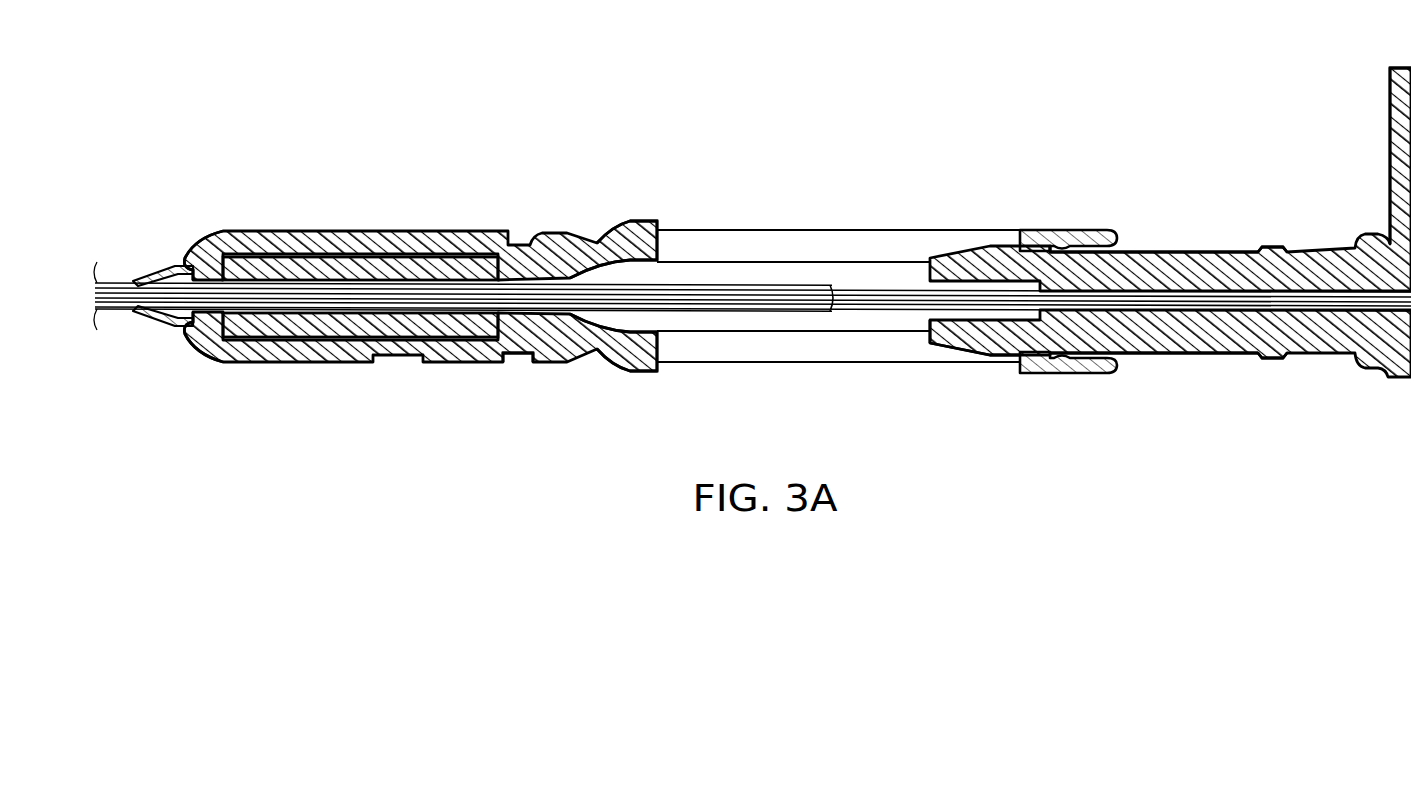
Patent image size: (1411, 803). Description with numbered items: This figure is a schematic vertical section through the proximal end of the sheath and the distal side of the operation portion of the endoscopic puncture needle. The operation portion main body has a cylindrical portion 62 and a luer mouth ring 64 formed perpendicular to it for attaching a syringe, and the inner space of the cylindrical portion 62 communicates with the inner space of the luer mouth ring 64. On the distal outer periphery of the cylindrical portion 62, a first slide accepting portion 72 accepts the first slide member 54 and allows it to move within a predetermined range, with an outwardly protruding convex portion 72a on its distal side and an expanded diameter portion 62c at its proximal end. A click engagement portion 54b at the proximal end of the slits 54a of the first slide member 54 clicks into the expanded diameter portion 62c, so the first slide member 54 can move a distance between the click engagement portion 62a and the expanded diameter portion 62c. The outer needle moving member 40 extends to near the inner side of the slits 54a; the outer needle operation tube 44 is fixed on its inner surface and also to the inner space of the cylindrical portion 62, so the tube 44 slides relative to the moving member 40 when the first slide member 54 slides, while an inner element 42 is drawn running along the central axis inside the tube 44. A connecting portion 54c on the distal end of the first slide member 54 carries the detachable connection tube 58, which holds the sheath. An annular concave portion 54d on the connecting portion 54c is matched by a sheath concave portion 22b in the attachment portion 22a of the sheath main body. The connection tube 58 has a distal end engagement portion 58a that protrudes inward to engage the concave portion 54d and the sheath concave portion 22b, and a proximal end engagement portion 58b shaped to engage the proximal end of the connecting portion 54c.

The attachment portion 22a is at (143, 277).
The sheath concave portion 22b is at (180, 335).
The outer needle moving member 40 is at (626, 282).
The inner wire 42 is at (899, 302).
The outer needle operation tube 44 is at (854, 312).
The first slide member 54 is at (545, 246).
The slits 54a is at (833, 240).
The click engagement portion 54b is at (1083, 238).
The connecting portion 54c is at (408, 267).
The annular concave portion 54d is at (213, 280).
The connection tube 58 is at (354, 357).
The distal end engagement portion 58a is at (200, 332).
The proximal end engagement portion 58b is at (512, 358).
The cylindrical portion 62 is at (1338, 352).
The click engagement portion 62a is at (992, 357).
The expanded diameter portion 62c is at (1270, 247).
The luer mouth ring 64 is at (1388, 94).
The first slide accepting portion 72 is at (1188, 252).
The convex portion 72a is at (1053, 362).